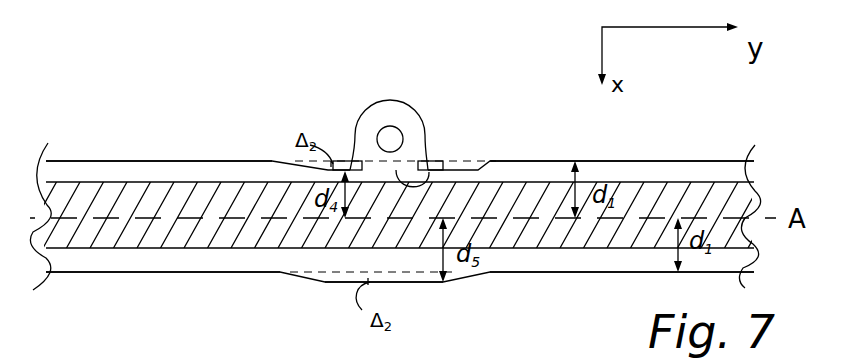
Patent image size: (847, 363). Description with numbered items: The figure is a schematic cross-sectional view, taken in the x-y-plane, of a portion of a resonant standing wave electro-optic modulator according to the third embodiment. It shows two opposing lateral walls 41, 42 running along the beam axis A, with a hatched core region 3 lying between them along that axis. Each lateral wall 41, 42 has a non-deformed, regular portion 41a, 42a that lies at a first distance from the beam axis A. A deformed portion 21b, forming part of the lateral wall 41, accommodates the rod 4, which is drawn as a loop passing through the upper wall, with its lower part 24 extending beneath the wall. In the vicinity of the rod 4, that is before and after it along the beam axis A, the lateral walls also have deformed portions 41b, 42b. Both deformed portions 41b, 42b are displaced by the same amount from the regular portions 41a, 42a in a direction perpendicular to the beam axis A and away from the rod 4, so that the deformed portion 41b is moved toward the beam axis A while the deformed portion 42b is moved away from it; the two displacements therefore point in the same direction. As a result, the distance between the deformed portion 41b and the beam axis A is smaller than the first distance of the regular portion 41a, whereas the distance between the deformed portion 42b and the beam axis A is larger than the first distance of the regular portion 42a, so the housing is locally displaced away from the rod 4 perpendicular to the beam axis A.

The core layer 3 is at (112, 205).
The rod 4 is at (386, 138).
The deformed portion 21b is at (400, 104).
The loop lower portion 24 is at (430, 170).
The lateral wall 41 is at (60, 160).
The regular portion 41a is at (165, 160).
The deformed portion 41b is at (348, 160).
The lateral wall 42 is at (65, 273).
The regular portion 42a is at (123, 272).
The deformed portion 42b is at (407, 283).